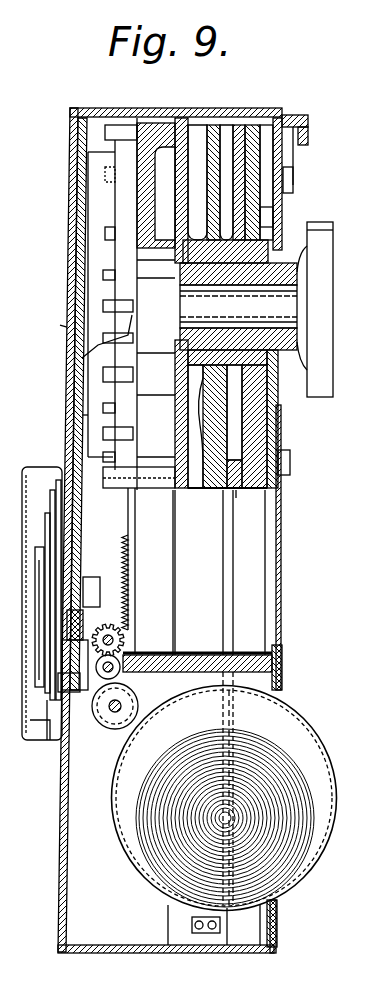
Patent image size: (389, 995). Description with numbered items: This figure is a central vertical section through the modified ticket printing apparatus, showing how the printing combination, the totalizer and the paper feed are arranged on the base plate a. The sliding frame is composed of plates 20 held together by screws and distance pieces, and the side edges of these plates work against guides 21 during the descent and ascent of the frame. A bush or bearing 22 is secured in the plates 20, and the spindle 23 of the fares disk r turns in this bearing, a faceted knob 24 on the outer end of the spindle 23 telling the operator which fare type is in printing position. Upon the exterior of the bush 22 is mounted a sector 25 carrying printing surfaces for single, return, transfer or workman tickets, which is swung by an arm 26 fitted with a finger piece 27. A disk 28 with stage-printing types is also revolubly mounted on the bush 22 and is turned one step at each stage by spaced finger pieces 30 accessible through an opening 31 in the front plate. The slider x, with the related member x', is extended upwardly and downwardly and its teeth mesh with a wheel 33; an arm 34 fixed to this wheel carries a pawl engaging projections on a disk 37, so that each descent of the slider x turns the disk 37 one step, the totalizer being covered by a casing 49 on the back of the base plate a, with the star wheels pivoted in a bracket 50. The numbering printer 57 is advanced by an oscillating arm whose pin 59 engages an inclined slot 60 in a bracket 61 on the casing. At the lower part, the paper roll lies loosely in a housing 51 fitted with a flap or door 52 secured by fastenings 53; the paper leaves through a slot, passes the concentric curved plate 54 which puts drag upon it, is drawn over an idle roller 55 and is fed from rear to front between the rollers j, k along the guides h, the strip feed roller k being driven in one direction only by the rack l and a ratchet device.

The fares disk r is at (150, 128).
The arm 26 is at (228, 117).
The finger piece 27 is at (306, 127).
The opening 31 is at (294, 193).
The finger pieces 30 is at (273, 213).
The spindle 23 is at (180, 305).
The knob 24 is at (320, 397).
The bush or bearing 22 is at (287, 353).
The disk 28 is at (290, 463).
The sector 25 is at (207, 489).
The plates 20 is at (173, 493).
The guides 21 is at (267, 551).
The base plate a is at (62, 323).
The lever x' is at (87, 346).
The slider x is at (65, 415).
The disk 37 is at (58, 487).
The bracket 61 is at (30, 522).
The pin 59 is at (27, 537).
The inclined slot 60 is at (25, 561).
The numbering printer 57 is at (22, 581).
The bracket 50 is at (36, 743).
The casing 49 is at (48, 743).
The arm 34 is at (88, 693).
The wheel 33 is at (80, 620).
The rack l is at (129, 548).
The strip feed roller k is at (127, 628).
The roller j is at (121, 672).
The guide device h is at (250, 653).
The fastenings 53 is at (284, 673).
The idle roller 55 is at (124, 714).
The housing 51 is at (165, 703).
The flap or door 52 is at (307, 877).
The curved plate 54 is at (136, 862).